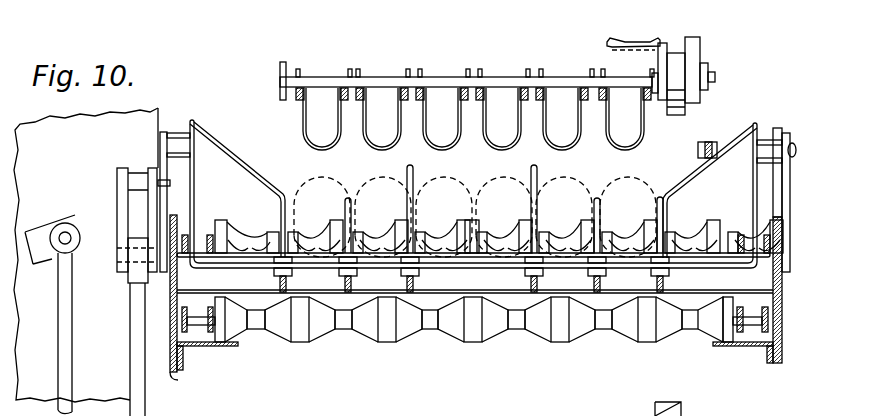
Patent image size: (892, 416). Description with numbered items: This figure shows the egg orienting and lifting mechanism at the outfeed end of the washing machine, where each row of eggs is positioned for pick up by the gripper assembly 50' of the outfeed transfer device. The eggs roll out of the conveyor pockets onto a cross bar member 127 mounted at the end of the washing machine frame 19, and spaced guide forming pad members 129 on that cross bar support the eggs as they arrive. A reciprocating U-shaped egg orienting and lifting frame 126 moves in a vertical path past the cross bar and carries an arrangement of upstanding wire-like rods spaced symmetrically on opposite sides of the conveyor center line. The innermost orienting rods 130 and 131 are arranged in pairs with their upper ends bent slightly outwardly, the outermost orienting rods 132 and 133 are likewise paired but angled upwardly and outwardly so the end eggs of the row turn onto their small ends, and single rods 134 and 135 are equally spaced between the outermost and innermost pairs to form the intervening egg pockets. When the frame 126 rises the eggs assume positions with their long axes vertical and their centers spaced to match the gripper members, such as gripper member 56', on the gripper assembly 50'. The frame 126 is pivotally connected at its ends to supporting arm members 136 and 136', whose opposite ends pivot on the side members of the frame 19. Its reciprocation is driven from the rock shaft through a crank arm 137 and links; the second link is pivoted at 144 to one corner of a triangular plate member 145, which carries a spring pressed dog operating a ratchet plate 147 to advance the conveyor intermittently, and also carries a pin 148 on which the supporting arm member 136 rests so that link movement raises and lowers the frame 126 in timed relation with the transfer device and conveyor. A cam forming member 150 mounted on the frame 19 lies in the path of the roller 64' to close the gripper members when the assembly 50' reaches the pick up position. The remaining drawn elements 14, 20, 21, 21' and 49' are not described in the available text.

The container 14 is at (300, 180).
The washing machine frame 19 is at (785, 352).
The roller 20 is at (300, 343).
The roller bearing 21 is at (207, 341).
The roller bearing 21' is at (743, 338).
The bracket 49' is at (633, 31).
The gripper assembly 50' is at (678, 59).
The gripper member 56' is at (467, 114).
The roller 64' is at (721, 69).
The egg orienting and lifting frame 126 is at (484, 268).
The cross bar member 127 is at (510, 285).
The guide forming pad member 129 is at (238, 240).
The innermost orienting rod 130 is at (407, 171).
The innermost orienting rod 131 is at (538, 178).
The outermost orienting rod 132 is at (237, 189).
The outermost orienting rod 133 is at (692, 183).
The single rod 134 is at (343, 205).
The single rod 135 is at (605, 213).
The supporting arm member 136 is at (187, 181).
The supporting arm member 136' is at (776, 180).
The crank arm 137 is at (48, 215).
The pivot 144 is at (119, 280).
The triangular plate member 145 is at (117, 210).
The ratchet plate 147 is at (173, 374).
The pin 148 is at (170, 183).
The cam forming member 150 is at (708, 141).